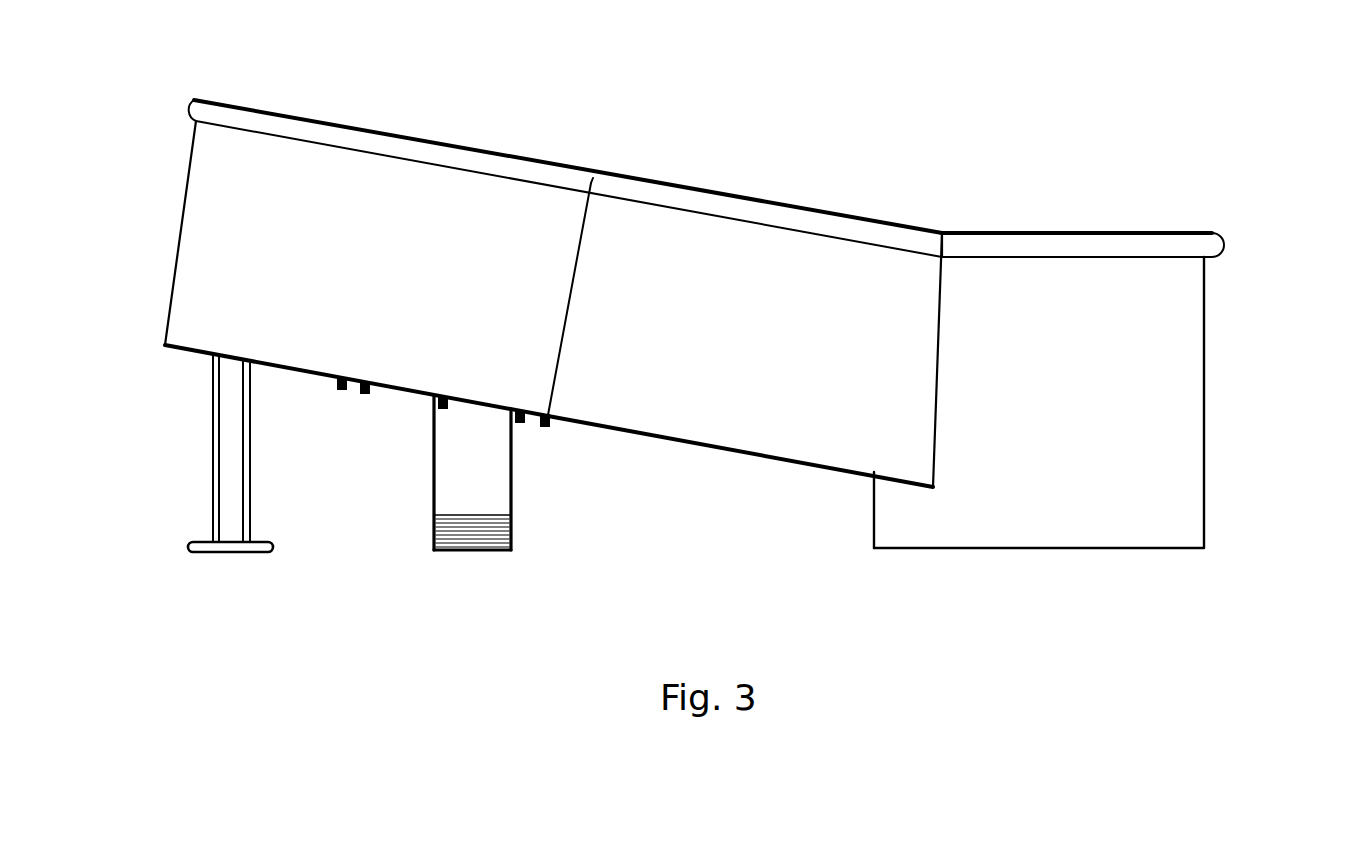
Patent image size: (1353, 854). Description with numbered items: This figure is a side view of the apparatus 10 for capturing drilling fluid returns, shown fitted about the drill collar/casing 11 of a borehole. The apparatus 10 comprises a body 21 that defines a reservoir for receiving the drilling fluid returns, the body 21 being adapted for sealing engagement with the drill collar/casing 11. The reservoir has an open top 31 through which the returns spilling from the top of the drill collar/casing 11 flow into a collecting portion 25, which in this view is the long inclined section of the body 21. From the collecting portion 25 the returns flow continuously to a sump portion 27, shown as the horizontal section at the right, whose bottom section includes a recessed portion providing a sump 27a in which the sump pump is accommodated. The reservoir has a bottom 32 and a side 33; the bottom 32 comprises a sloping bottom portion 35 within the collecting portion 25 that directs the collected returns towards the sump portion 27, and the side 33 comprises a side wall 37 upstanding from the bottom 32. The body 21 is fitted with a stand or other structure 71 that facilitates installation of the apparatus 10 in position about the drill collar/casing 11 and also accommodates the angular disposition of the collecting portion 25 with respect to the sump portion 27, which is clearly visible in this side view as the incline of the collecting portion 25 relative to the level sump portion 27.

The apparatus 10 is at (350, 116).
The drill collar/casing 11 is at (424, 443).
The body 21 is at (621, 227).
The collecting portion 25 is at (497, 153).
The sump portion 27 is at (1062, 231).
The sump 27a is at (873, 505).
The open top 31 is at (740, 197).
The bottom 32 is at (654, 436).
The side 33 is at (823, 261).
The sloping bottom portion 35 is at (760, 455).
The side wall 37 is at (1173, 375).
The stand or other structure 71 is at (222, 425).